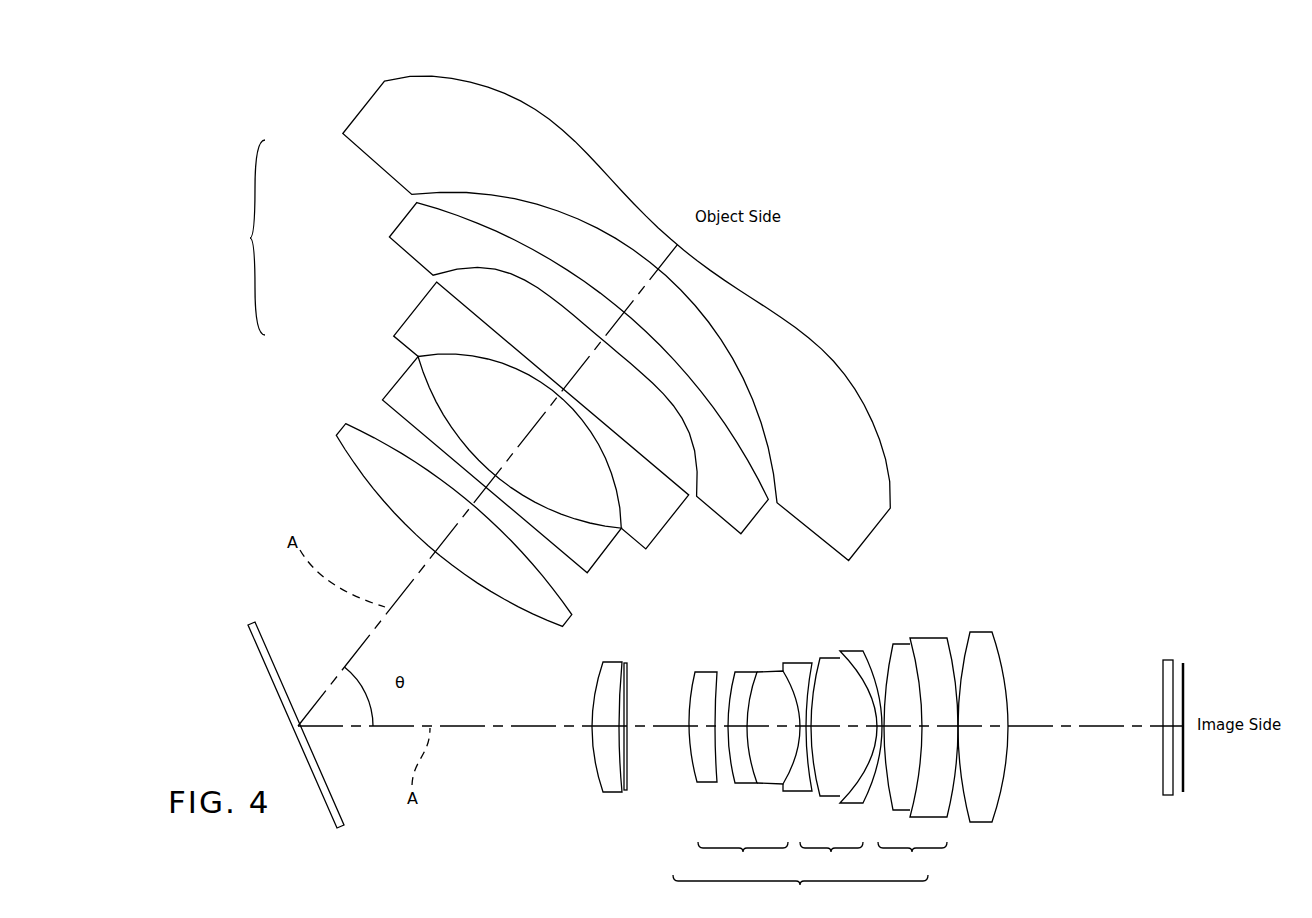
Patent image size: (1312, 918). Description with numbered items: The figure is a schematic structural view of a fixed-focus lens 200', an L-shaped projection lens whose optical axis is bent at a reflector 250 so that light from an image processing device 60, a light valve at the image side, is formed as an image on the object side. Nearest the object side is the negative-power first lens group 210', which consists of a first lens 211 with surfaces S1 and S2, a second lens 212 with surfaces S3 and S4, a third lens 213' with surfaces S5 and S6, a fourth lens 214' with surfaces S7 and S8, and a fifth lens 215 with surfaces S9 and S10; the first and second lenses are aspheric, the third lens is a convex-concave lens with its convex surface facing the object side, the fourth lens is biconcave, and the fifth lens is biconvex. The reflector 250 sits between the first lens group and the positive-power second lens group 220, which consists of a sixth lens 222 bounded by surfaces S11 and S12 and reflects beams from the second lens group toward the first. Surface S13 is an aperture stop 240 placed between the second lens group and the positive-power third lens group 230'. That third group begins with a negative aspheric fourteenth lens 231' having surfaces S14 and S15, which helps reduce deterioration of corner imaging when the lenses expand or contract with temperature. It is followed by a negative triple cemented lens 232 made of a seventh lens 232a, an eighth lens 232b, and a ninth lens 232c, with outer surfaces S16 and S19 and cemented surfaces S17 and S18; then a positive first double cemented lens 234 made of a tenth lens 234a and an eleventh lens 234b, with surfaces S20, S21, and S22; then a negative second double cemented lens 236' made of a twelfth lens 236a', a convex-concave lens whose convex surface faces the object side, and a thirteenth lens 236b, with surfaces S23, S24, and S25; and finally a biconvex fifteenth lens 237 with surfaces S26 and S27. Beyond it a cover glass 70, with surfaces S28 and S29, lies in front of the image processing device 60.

The fixed-focus lens 200' is at (1256, 827).
The first lens group 210' is at (239, 237).
The first lens 211 is at (372, 111).
The second lens 212 is at (423, 231).
The third lens 213' is at (483, 389).
The fourth lens 214' is at (449, 424).
The fifth lens 215 is at (345, 428).
The reflector 250 is at (275, 657).
The sixth lens 222 is at (560, 727).
The second lens group 220 is at (602, 763).
The aperture stop 240 is at (632, 758).
The third lens group 230' is at (839, 774).
The fourteenth lens 231' is at (693, 771).
The triple cemented lens 232 is at (755, 768).
The seventh lens 232a is at (737, 784).
The eighth lens 232b is at (760, 785).
The ninth lens 232c is at (797, 792).
The first double cemented lens 234 is at (841, 762).
The tenth lens 234a is at (830, 797).
The eleventh lens 234b is at (857, 804).
The second double cemented lens 236' is at (921, 756).
The twelfth lens 236a' is at (900, 743).
The thirteenth lens 236b is at (937, 819).
The fifteenth lens 237 is at (985, 822).
The cover glass 70 is at (1163, 780).
The image processing device 60 is at (1183, 763).
The surface S1 is at (856, 390).
The surface S2 is at (773, 458).
The surface S3 is at (745, 456).
The surface S4 is at (699, 473).
The surface S5 is at (659, 471).
The surface S6 is at (622, 508).
The surface S7 is at (588, 524).
The surface S8 is at (565, 552).
The surface S9 is at (553, 584).
The surface S10 is at (544, 616).
The surface S11 is at (596, 692).
The surface S12 is at (622, 681).
The surface S13 is at (629, 700).
The surface S14 is at (694, 686).
The surface S15 is at (714, 684).
The surface S16 is at (734, 684).
The surface S17 is at (757, 684).
The surface S18 is at (784, 682).
The surface S19 is at (808, 673).
The surface S20 is at (817, 670).
The surface S21 is at (848, 670).
The surface S22 is at (869, 668).
The surface S23 is at (889, 660).
The surface S24 is at (913, 654).
The surface S25 is at (950, 654).
The surface S26 is at (965, 650).
The surface S27 is at (997, 648).
The surface S28 is at (1161, 677).
The surface S29 is at (1174, 664).